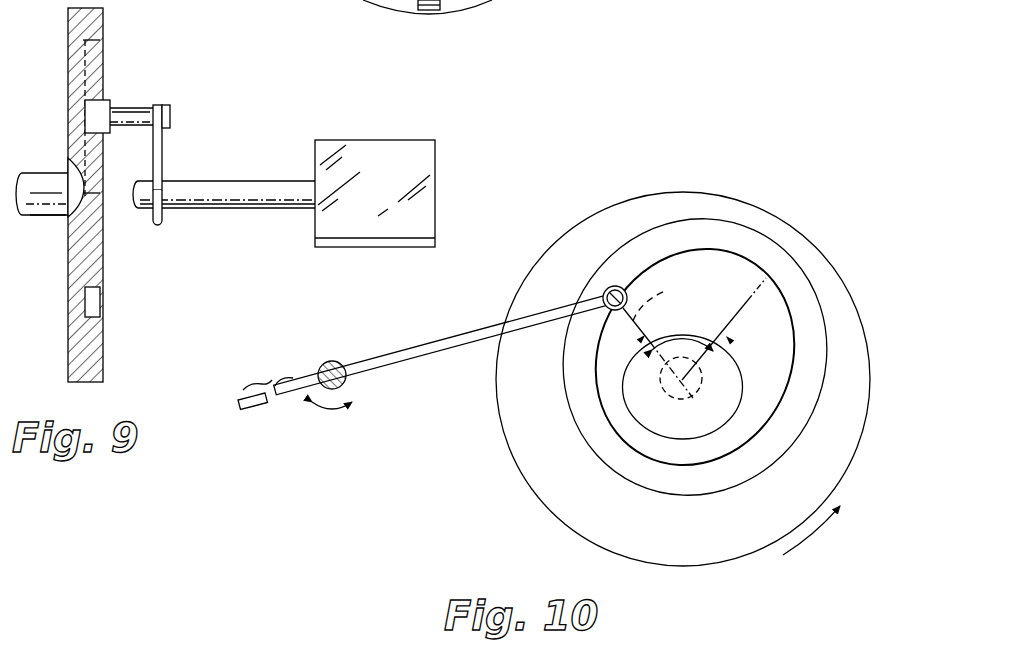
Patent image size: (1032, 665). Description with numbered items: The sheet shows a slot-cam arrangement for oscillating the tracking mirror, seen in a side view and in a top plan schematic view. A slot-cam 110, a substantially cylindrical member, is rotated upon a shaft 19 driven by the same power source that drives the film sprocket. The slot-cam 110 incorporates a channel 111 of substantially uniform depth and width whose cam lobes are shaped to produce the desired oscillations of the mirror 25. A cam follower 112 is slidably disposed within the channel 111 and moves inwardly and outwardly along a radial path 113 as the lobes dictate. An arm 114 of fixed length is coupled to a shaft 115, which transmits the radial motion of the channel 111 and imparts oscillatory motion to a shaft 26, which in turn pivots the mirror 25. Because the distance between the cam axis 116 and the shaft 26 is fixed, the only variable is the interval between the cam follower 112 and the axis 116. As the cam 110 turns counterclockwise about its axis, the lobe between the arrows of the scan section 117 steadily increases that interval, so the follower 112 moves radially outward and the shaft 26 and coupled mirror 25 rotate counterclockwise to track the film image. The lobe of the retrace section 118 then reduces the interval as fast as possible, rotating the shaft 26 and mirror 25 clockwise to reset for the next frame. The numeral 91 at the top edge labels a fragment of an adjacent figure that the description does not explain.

In FIG. 9, the slot-cam 110 is at (106, 24).
In FIG. 10, the slot-cam 110 is at (702, 184).
In FIG. 10, the channel 111 is at (795, 256).
In FIG. 9, the cam follower 112 is at (104, 108).
In FIG. 10, the cam follower 112 is at (612, 287).
In FIG. 10, the radial path 113 is at (652, 305).
In FIG. 9, the arm 114 is at (163, 155).
In FIG. 10, the arm 114 is at (433, 338).
In FIG. 9, the shaft 115 is at (171, 112).
In FIG. 10, the shaft 115 is at (624, 290).
In FIG. 9, the axis 116 is at (46, 193).
In FIG. 10, the axis 116 is at (684, 398).
In FIG. 10, the scan section 117 is at (748, 365).
In FIG. 10, the retrace section 118 is at (694, 328).
In FIG. 9, the shaft 19 is at (46, 217).
In FIG. 9, the mirror 25 is at (428, 210).
In FIG. 9, the shaft 26 is at (232, 209).
In FIG. 10, the shaft 26 is at (334, 361).
In FIG. 9, the fragment of adjacent figure element 91 is at (360, 4).